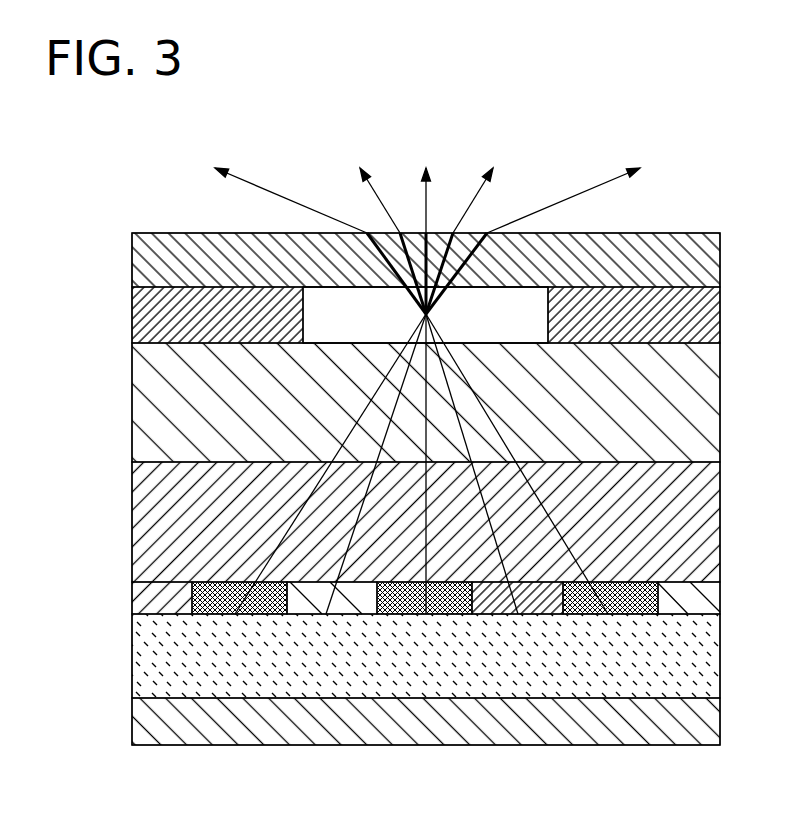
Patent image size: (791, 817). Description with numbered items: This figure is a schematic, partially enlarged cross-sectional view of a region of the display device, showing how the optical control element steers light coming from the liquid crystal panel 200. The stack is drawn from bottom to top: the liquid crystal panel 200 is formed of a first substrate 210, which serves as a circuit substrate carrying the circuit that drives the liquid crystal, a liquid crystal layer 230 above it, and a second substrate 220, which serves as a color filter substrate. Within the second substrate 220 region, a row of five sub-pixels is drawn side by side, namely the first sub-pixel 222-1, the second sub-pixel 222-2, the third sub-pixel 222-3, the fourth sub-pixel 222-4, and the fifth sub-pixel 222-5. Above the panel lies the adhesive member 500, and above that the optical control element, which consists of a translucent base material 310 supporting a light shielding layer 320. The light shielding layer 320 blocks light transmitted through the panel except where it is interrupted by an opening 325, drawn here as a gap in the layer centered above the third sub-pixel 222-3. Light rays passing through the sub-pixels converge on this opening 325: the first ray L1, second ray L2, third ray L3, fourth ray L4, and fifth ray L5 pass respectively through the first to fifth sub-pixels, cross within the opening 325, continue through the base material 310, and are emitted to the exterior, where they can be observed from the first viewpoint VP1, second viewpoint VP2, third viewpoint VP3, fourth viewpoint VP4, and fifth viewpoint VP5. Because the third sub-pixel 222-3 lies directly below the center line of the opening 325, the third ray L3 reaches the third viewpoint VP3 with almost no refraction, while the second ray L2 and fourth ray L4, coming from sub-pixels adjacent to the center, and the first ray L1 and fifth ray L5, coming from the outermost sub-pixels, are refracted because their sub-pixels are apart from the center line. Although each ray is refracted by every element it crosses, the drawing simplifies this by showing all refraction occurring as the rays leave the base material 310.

The base material 310 is at (150, 260).
The light shielding layer 320 is at (152, 317).
The opening 325 is at (487, 322).
The adhesive member 500 is at (153, 390).
The liquid crystal panel 200 is at (360, 602).
The second substrate 220 is at (121, 462).
The first sub-pixel 222-1 is at (240, 614).
The second sub-pixel 222-2 is at (334, 614).
The third sub-pixel 222-3 is at (426, 614).
The fourth sub-pixel 222-4 is at (518, 614).
The fifth sub-pixel 222-5 is at (612, 614).
The liquid crystal layer 230 is at (155, 665).
The first substrate 210 is at (391, 721).
The first viewpoint VP1 is at (554, 233).
The second viewpoint VP2 is at (469, 228).
The third viewpoint VP3 is at (428, 228).
The fourth viewpoint VP4 is at (382, 228).
The fifth viewpoint VP5 is at (297, 235).
The first light ray L1 is at (382, 380).
The second light ray L2 is at (395, 411).
The third light ray L3 is at (438, 445).
The fourth light ray L4 is at (497, 505).
The fifth light ray L5 is at (578, 552).